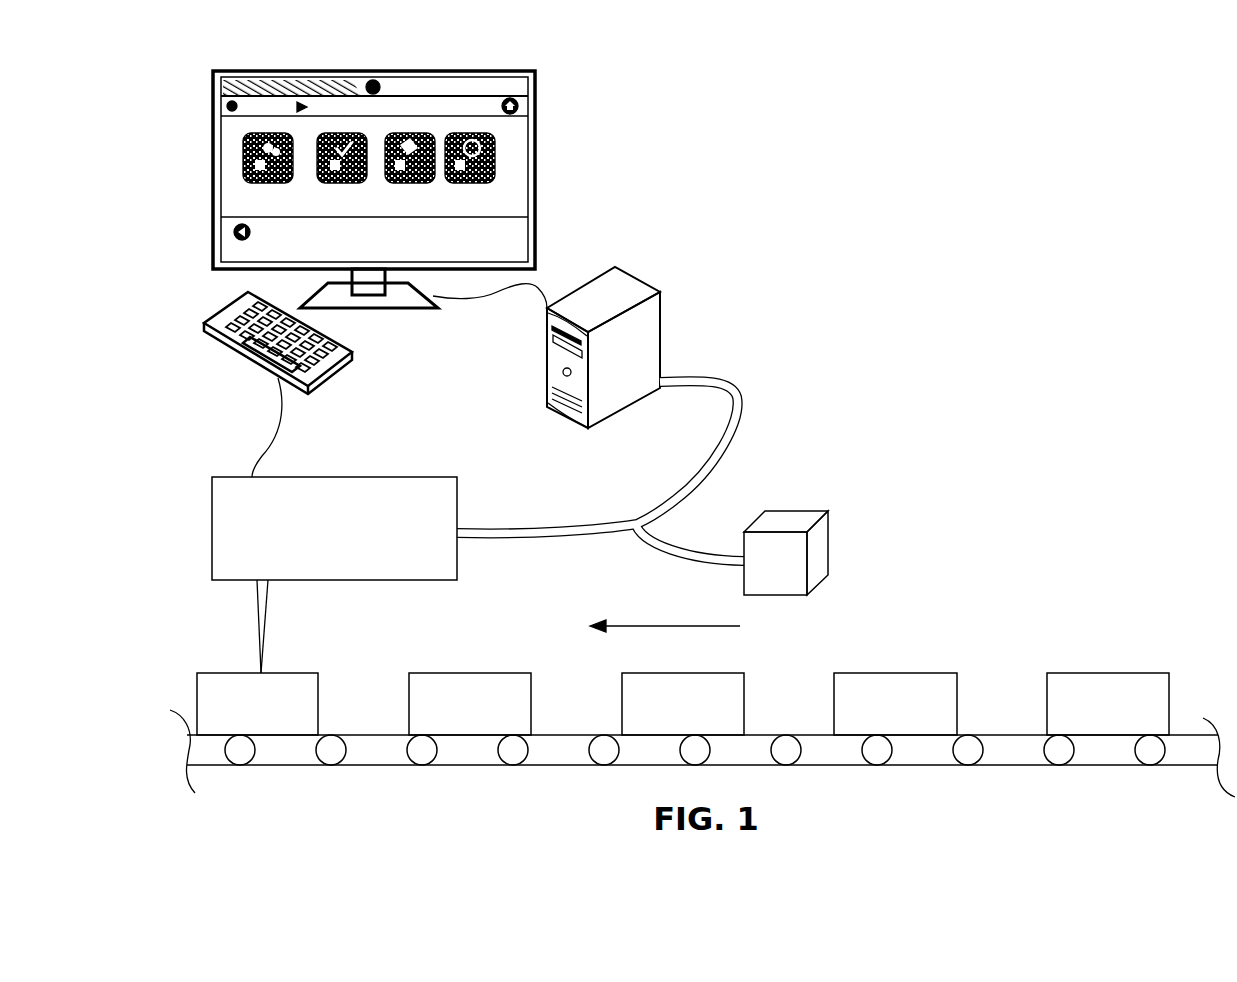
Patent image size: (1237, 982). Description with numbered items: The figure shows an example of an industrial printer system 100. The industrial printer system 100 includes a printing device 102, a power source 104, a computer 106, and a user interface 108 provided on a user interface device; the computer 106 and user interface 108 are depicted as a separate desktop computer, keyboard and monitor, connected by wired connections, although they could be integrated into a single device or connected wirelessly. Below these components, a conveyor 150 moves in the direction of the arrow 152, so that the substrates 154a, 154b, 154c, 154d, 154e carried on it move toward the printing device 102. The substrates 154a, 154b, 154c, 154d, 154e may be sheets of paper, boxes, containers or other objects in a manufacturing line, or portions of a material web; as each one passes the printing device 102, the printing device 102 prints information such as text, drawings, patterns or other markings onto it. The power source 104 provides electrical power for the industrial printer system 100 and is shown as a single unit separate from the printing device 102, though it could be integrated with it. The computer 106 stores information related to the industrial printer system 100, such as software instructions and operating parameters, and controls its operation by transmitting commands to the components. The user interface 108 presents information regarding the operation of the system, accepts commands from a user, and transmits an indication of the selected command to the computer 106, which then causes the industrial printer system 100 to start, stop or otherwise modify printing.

The industrial printer system 100 is at (957, 249).
The printing device 102 is at (440, 563).
The power source 104 is at (805, 520).
The computer 106 is at (630, 298).
The user interface 108 is at (508, 168).
The conveyor 150 is at (912, 747).
The arrow 152 is at (680, 698).
The substrate 154a is at (310, 700).
The substrate 154b is at (510, 702).
The substrate 154c is at (723, 702).
The substrate 154d is at (938, 702).
The substrate 154e is at (1147, 702).